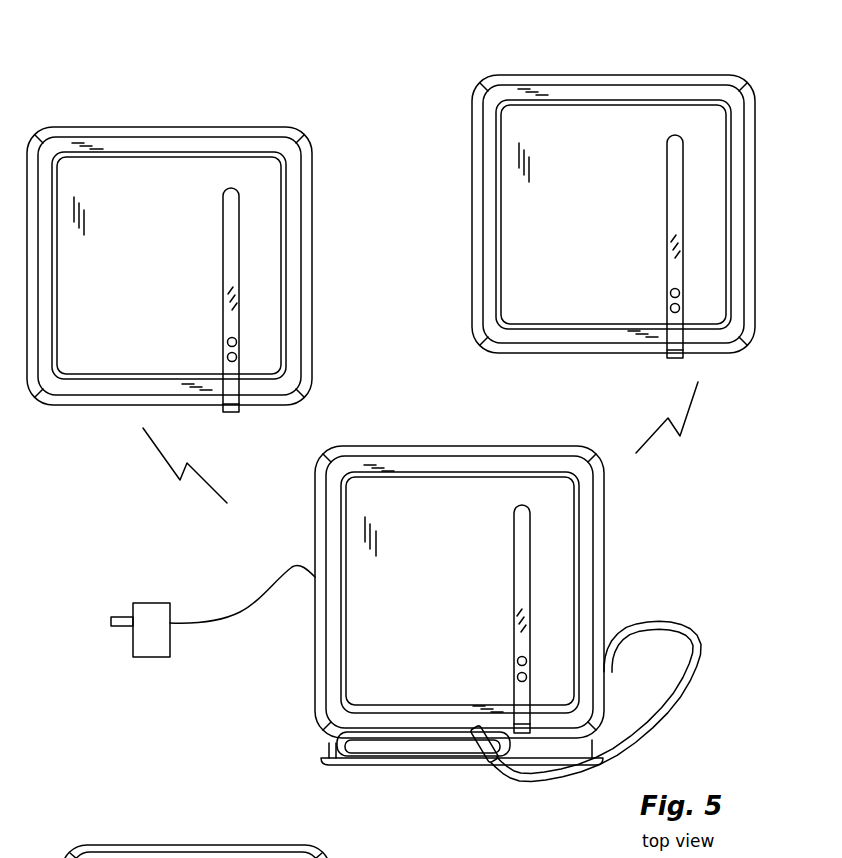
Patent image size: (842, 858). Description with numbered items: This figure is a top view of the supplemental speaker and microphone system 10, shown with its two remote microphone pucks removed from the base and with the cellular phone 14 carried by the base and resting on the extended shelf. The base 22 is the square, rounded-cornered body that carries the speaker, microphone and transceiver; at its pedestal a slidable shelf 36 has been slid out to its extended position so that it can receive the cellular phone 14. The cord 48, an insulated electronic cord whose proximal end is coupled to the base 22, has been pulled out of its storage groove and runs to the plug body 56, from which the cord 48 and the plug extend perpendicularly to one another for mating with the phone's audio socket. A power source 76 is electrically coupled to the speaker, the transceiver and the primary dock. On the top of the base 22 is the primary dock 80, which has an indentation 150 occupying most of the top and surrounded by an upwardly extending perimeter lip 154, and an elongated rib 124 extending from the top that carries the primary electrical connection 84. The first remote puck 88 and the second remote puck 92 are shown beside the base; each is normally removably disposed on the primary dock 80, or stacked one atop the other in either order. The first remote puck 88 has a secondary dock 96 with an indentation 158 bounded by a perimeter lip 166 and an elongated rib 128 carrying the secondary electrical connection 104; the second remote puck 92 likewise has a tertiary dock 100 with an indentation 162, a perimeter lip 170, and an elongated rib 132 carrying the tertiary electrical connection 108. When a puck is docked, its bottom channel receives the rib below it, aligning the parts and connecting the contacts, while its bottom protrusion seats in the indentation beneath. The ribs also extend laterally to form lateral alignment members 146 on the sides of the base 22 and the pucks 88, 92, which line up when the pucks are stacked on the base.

The supplemental speaker and microphone system 10 is at (273, 684).
The cellular phone 14 is at (377, 744).
The base 22 is at (595, 540).
The slidable shelf 36 is at (343, 768).
The cord 48 is at (703, 665).
The plug body 56 is at (480, 758).
The power source 76 is at (148, 603).
The primary dock 80 is at (464, 501).
The primary electrical connection 84 is at (515, 661).
The first remote puck 88 is at (103, 120).
The second remote puck 92 is at (668, 62).
The secondary dock 96 is at (187, 167).
The tertiary dock 100 is at (612, 122).
The secondary electrical connection 104 is at (240, 342).
The tertiary electrical connection 108 is at (683, 290).
The elongated rib 124 is at (526, 588).
The elongated rib 128 is at (235, 230).
The elongated rib 132 is at (678, 197).
The lateral alignment member 146 is at (233, 413).
The indentation 150 is at (403, 501).
The perimeter lip 154 is at (520, 466).
The indentation 158 is at (97, 355).
The indentation 162 is at (527, 277).
The perimeter lip 166 is at (119, 387).
The perimeter lip 170 is at (492, 233).